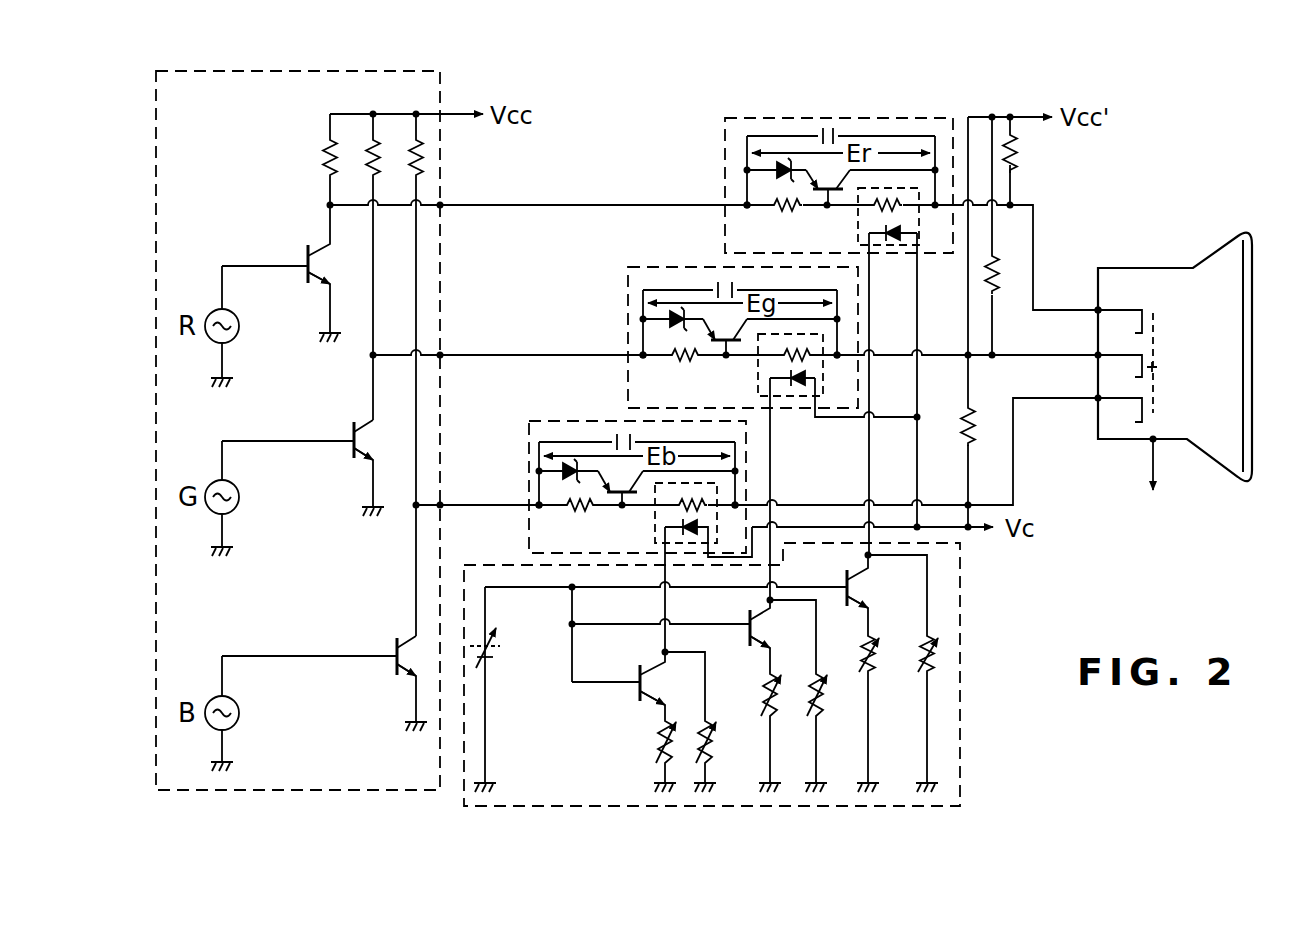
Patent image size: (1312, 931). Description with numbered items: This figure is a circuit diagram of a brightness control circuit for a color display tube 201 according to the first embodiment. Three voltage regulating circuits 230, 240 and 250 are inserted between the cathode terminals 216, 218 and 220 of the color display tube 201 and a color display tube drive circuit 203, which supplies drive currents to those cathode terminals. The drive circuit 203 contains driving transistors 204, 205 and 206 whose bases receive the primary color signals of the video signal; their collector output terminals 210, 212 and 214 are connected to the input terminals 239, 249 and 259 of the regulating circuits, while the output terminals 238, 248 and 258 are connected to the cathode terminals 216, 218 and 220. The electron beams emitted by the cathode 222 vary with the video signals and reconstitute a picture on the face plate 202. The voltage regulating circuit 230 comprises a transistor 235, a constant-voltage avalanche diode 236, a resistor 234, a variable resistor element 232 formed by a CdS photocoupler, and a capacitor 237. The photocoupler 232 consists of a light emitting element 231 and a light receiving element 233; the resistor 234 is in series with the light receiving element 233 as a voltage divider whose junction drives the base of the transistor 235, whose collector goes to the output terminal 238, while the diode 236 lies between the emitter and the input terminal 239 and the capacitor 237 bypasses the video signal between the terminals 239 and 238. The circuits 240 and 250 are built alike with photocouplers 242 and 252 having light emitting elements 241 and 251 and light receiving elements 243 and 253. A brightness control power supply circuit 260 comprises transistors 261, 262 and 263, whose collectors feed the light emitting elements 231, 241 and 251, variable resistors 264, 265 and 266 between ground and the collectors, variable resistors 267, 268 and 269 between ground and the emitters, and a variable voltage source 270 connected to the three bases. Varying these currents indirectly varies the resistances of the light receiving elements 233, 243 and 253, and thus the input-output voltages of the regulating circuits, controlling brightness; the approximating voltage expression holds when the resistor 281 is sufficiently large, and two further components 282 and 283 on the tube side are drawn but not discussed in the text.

The color display tube 201 is at (1155, 268).
The face plate 202 is at (1253, 345).
The color display tube drive circuit 203 is at (440, 84).
The driving transistor 204 is at (326, 288).
The driving transistor 205 is at (355, 461).
The driving transistor 206 is at (390, 673).
The collector output terminal 210 is at (447, 200).
The collector output terminal 212 is at (448, 352).
The collector output terminal 214 is at (448, 500).
The cathode terminal 216 is at (1094, 308).
The cathode terminal 218 is at (1088, 358).
The cathode terminal 220 is at (1092, 400).
The cathode 222 is at (1158, 330).
The voltage regulating circuit 230 is at (878, 118).
The light emitting element 231 is at (892, 246).
The variable resistor element 232 is at (920, 240).
The light receiving element 233 is at (872, 210).
The resistor 234 is at (775, 210).
The transistor 235 is at (822, 172).
The constant-voltage diode 236 is at (770, 175).
The capacitor 237 is at (827, 130).
The output terminal 238 is at (948, 198).
The input terminal 239 is at (745, 210).
The voltage regulating circuit 240 is at (660, 267).
The light emitting element 241 is at (801, 392).
The photocoupler 242 is at (752, 388).
The light receiving element 243 is at (780, 356).
The output terminal 248 is at (838, 360).
The input terminal 249 is at (641, 355).
The voltage regulating circuit 250 is at (557, 420).
The light emitting element 251 is at (678, 527).
The photocoupler 252 is at (660, 543).
The light receiving element 253 is at (674, 507).
The output terminal 258 is at (740, 505).
The input terminal 259 is at (538, 508).
The brightness control power supply circuit 260 is at (960, 600).
The transistor 261 is at (856, 599).
The transistor 262 is at (746, 624).
The transistor 263 is at (645, 675).
The variable resistor 264 is at (938, 660).
The variable resistor 265 is at (838, 700).
The variable resistor 266 is at (713, 740).
The variable resistor 267 is at (885, 660).
The variable resistor 268 is at (760, 699).
The variable resistor 269 is at (650, 745).
The variable voltage source 270 is at (507, 672).
The resistor 281 is at (1018, 152).
The resistor 282 is at (1002, 294).
The resistor 283 is at (956, 424).